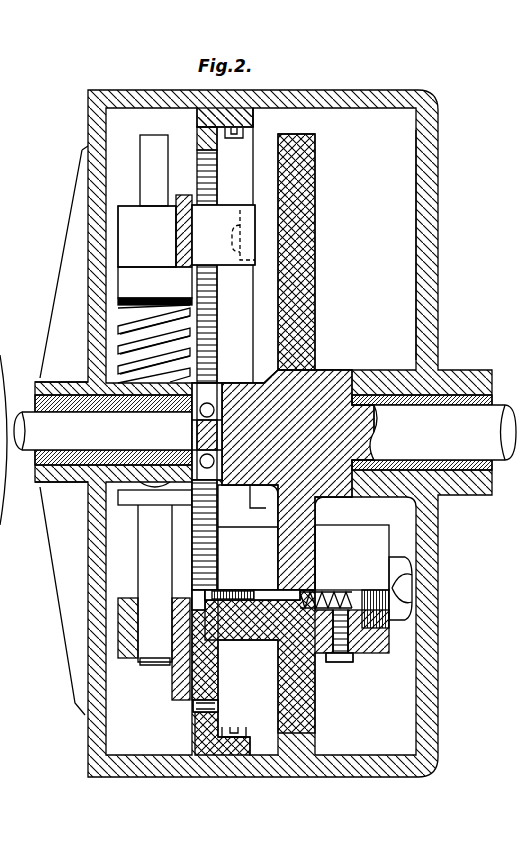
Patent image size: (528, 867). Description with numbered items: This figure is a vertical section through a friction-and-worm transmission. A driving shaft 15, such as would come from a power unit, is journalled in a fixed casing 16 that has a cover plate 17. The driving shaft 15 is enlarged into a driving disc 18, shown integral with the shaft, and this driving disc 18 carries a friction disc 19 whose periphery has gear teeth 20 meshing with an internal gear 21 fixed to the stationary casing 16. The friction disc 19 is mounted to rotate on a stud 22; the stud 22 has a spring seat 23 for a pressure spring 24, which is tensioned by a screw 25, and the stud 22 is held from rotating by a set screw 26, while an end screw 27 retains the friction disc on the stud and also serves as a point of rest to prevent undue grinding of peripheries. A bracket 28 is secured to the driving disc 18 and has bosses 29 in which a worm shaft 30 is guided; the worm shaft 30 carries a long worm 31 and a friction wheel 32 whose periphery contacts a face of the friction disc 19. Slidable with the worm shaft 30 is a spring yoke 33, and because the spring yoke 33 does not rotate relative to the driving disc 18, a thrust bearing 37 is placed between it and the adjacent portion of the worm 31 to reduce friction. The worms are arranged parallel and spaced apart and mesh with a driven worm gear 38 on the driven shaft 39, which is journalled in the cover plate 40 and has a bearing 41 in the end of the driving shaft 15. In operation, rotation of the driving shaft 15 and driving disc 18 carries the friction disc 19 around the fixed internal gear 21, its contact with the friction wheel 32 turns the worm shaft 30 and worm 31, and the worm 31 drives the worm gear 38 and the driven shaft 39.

The driving shaft 15 is at (444, 400).
The fixed casing 16 is at (431, 252).
The cover plate 17 is at (88, 658).
The driving disc 18 is at (308, 266).
The friction disc 19 is at (209, 557).
The peripheral gear teeth 20 is at (194, 706).
The internal gear 21 is at (216, 339).
The stud 22 is at (275, 590).
The spring seat 23 is at (334, 640).
The pressure spring 24 is at (338, 590).
The screw 25 is at (382, 630).
The set screw 26 is at (350, 661).
The end screw 27 is at (194, 596).
The bracket 28 is at (177, 230).
The boss 29 is at (128, 220).
The worm shaft 30 is at (142, 655).
The long worm 31 is at (128, 357).
The friction wheel 32 is at (132, 507).
The spring yoke 33 is at (128, 279).
The thrust bearing 37 is at (118, 301).
The driven worm gear 38 is at (148, 479).
The driven shaft 39 is at (103, 430).
The cover plate 40 is at (47, 485).
The bearing 41 is at (226, 392).